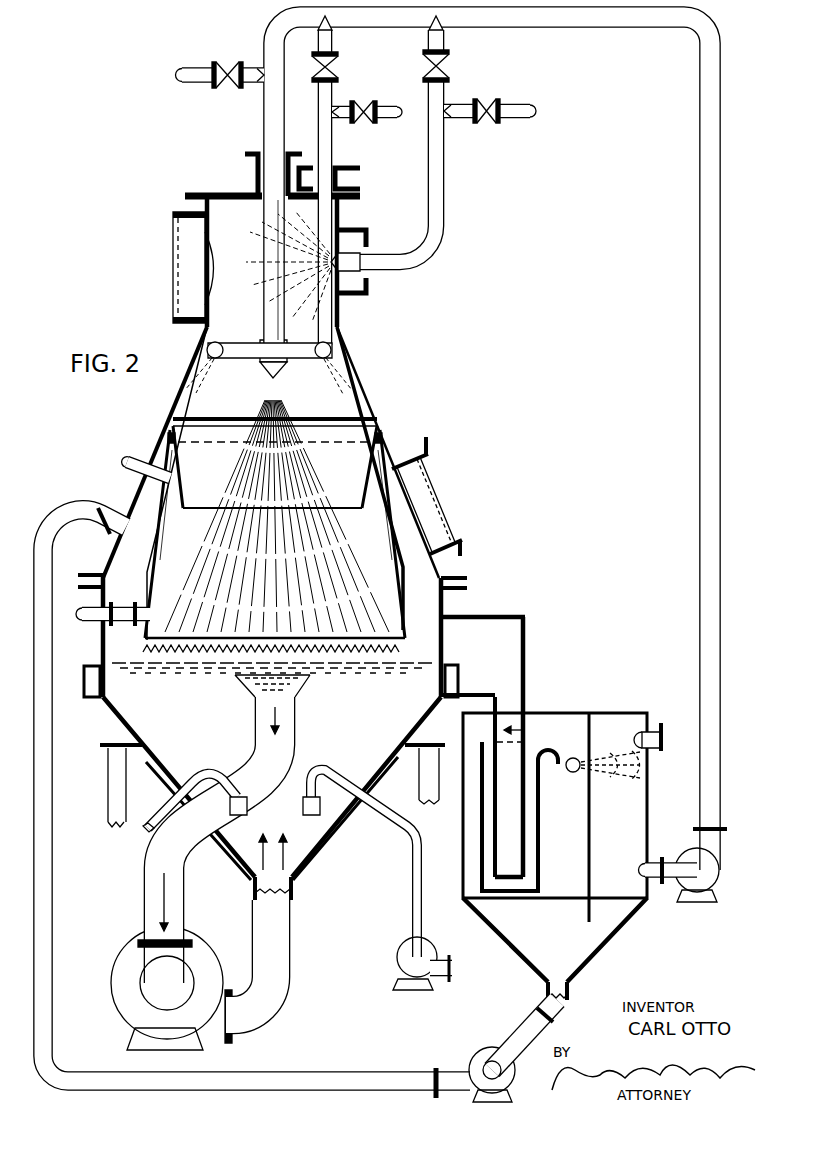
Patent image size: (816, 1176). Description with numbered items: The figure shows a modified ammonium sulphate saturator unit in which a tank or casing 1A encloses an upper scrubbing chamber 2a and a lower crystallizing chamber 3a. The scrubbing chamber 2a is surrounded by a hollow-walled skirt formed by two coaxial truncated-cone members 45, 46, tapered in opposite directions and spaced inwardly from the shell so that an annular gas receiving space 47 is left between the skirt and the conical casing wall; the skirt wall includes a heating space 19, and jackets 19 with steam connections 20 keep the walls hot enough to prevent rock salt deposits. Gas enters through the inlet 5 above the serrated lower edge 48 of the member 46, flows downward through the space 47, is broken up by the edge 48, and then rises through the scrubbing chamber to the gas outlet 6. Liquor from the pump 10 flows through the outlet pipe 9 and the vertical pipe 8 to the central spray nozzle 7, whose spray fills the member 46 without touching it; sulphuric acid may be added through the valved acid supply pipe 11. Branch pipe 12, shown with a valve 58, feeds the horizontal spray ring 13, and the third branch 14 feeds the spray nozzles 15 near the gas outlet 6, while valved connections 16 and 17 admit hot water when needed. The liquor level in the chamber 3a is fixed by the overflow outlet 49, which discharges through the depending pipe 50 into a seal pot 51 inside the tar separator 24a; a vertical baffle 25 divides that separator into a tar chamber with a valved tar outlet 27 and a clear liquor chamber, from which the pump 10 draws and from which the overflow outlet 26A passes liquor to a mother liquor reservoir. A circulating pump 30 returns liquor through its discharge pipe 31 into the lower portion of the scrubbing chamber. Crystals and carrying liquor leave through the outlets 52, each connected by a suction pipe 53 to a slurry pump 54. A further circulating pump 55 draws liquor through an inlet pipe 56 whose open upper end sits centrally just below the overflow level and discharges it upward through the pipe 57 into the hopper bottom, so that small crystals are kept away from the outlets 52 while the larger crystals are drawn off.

The tank or casing 1A is at (370, 385).
The scrubbing chamber or space 2a is at (275, 534).
The crystallizing space or chamber 3a is at (272, 798).
The gas inlet 5 is at (427, 496).
The gas outlet 6 is at (193, 267).
The spray nozzle 7 is at (290, 350).
The vertically disposed pipe 8 is at (262, 290).
The outlet pipe of pump 9 is at (697, 620).
The pump 10 is at (697, 887).
The valved acid supply pipe 11 is at (248, 90).
The branch pipe 12 is at (315, 118).
The horizontal spray ring 13 is at (243, 368).
The third branch 14 is at (447, 198).
The spray nozzle 15 is at (362, 262).
The valved pipe connection 16 is at (384, 122).
The valved pipe connection 17 is at (515, 104).
The wall heating jacket 19 is at (155, 535).
The pipe connection 20 is at (147, 455).
The tar separator 24a is at (652, 827).
The vertical baffle 25 is at (592, 862).
The overflow outlet 26A is at (660, 730).
The valved tar outlet 27 is at (566, 770).
The liquor circulating pump 30 is at (478, 1048).
The discharge pipe 31 is at (52, 848).
The hollow truncated-cone member 45 is at (362, 460).
The hollow truncated-cone member 46 is at (165, 600).
The annular gas receiving space 47 is at (118, 495).
The serrated lower edge 48 is at (355, 655).
The overflow outlet 49 is at (482, 747).
The depending pipe 50 is at (524, 731).
The seal pot 51 is at (478, 832).
The crystal outlet 52 is at (300, 808).
The suction pipe 53 is at (145, 833).
The slurry pump 54 is at (400, 940).
The circulating pump 55 is at (120, 940).
The inlet pipe 56 is at (250, 717).
The discharge pipe 57 is at (283, 988).
The valve 58 is at (340, 65).